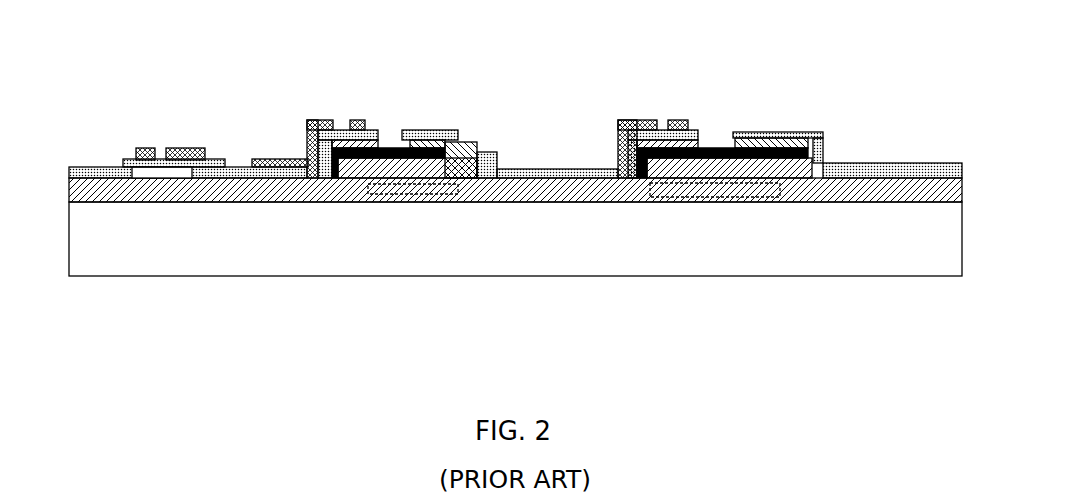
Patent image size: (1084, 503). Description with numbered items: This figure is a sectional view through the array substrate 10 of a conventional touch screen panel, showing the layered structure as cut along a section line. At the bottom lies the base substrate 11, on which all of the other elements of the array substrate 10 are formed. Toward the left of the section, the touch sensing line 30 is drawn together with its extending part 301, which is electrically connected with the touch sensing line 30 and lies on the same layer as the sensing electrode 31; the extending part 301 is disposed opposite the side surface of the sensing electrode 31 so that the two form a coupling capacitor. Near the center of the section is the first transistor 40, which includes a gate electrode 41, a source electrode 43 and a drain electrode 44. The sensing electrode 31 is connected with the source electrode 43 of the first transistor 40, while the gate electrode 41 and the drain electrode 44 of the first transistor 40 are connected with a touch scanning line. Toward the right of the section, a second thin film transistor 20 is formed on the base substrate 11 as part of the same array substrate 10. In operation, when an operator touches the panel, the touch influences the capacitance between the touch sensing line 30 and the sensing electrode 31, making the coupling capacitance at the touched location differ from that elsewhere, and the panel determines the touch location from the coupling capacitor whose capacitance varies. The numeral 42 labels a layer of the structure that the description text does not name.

The array substrate 10 is at (822, 288).
The base substrate 11 is at (577, 237).
The second thin film transistor 20 is at (780, 133).
The touch sensing line 30 is at (152, 148).
The extending part 301 is at (175, 148).
The sensing electrode 31 is at (280, 160).
The first transistor 40 is at (413, 131).
The gate electrode 41 is at (435, 203).
The gate electrode 42 is at (338, 172).
The source electrode 43 is at (370, 131).
The drain electrode 44 is at (461, 143).